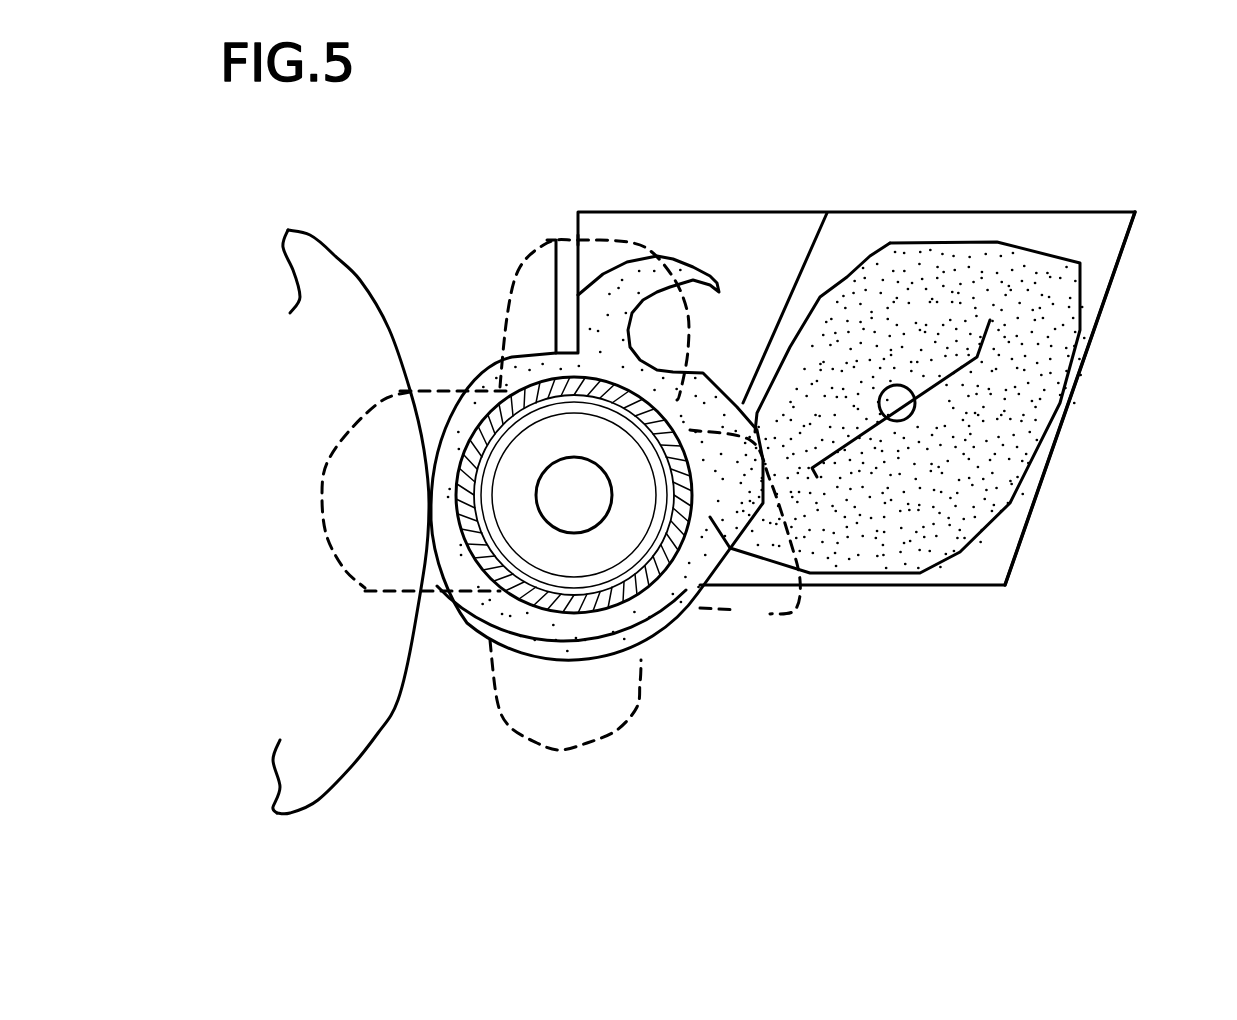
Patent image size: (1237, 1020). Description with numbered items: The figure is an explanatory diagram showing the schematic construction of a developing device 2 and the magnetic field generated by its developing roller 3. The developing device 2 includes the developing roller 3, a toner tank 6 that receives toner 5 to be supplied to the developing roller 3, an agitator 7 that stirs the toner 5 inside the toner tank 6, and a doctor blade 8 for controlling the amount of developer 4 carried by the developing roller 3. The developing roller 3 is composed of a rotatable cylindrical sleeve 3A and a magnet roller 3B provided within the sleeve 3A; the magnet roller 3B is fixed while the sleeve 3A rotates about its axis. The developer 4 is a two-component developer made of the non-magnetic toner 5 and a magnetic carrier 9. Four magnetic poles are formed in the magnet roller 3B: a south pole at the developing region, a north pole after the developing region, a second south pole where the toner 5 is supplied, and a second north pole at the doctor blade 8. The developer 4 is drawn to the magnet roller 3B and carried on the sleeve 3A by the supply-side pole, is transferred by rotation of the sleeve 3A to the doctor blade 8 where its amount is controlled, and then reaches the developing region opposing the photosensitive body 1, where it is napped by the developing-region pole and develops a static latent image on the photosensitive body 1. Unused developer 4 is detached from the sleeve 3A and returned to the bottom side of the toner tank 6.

The photosensitive body 1 is at (351, 522).
The developing device 2 is at (437, 228).
The developing roller 3 is at (579, 635).
The sleeve 3A is at (540, 608).
The magnet roller 3B is at (538, 557).
The developer 4 is at (737, 557).
The toner 5 is at (990, 473).
The toner tank 6 is at (1123, 245).
The agitator 7 is at (980, 358).
The doctor blade 8 is at (567, 268).
The magnetic carrier 9 is at (665, 622).